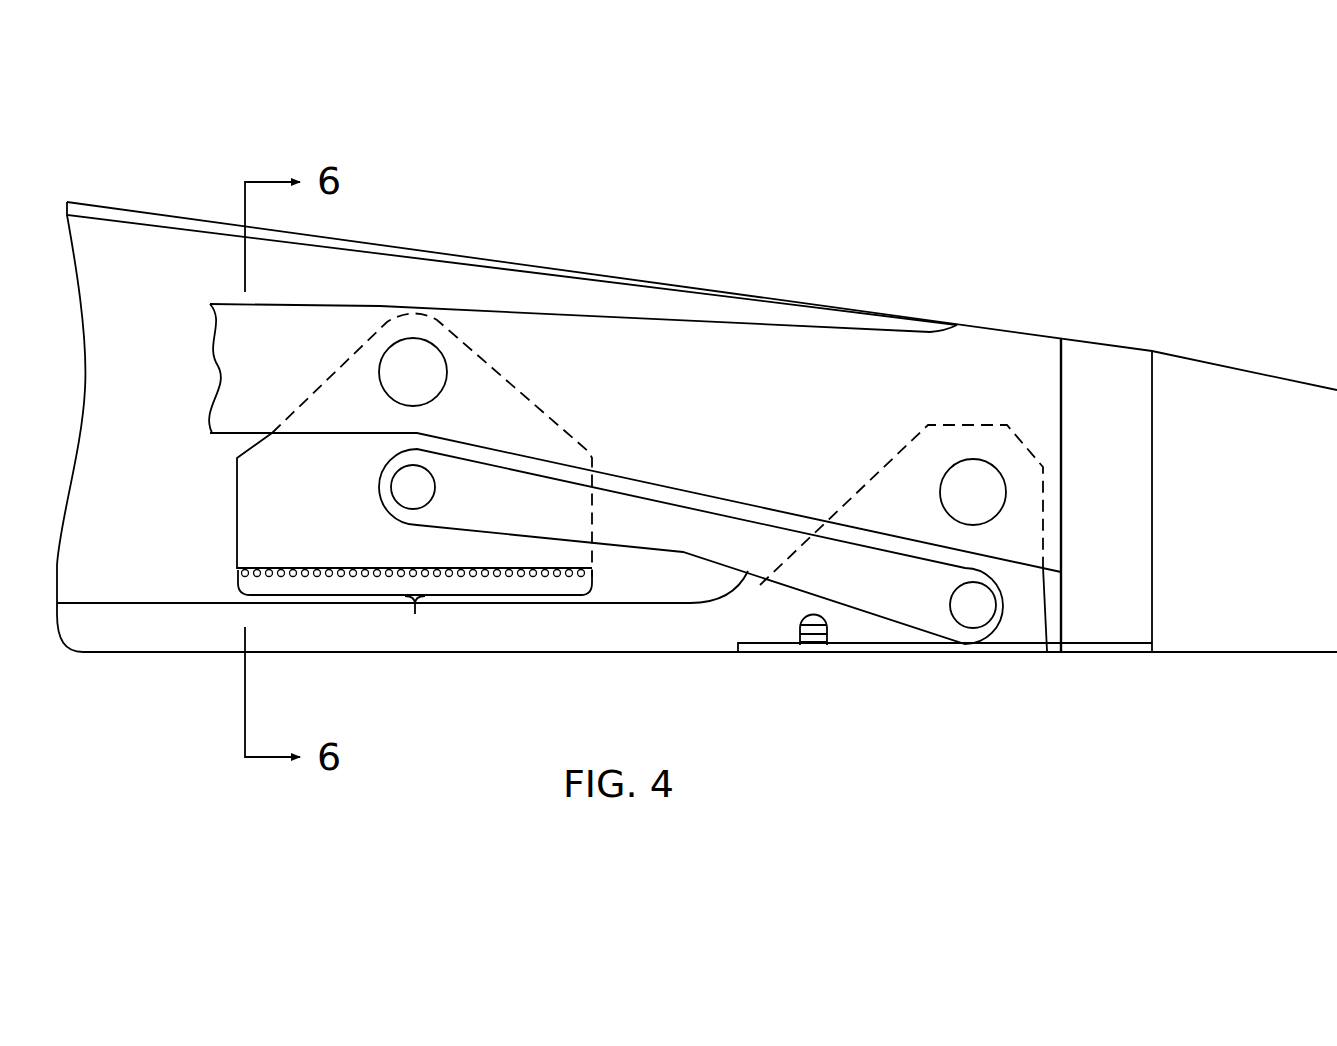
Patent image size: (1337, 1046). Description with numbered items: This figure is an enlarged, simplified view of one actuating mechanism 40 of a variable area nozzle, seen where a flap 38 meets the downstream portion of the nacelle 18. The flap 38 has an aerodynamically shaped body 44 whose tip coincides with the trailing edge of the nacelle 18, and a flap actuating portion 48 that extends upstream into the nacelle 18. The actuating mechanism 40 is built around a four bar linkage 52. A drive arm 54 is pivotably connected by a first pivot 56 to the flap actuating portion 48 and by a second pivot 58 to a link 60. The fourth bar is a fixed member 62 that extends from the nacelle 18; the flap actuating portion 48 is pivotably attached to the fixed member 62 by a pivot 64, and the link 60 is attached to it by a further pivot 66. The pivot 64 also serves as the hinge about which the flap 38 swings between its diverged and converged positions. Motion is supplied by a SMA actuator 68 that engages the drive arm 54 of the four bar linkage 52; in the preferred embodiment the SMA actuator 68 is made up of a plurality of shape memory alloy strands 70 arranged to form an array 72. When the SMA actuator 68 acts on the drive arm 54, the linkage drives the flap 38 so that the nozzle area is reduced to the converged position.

The nacelle 18 is at (163, 218).
The flap 38 is at (1203, 375).
The actuating mechanism 40 is at (722, 256).
The aerodynamically shaped body 44 is at (1282, 479).
The flap actuating portion 48 is at (734, 401).
The four bar linkage 52 is at (580, 304).
The drive arm 54 is at (313, 529).
The pivot 56 is at (420, 378).
The pivot 58 is at (427, 492).
The link 60 is at (701, 541).
The fixed member 62 is at (644, 647).
The pivot 64 is at (957, 472).
The pivot 66 is at (968, 602).
The SMA actuator 68 is at (222, 577).
The strands 70 is at (267, 576).
The array 72 is at (417, 624).